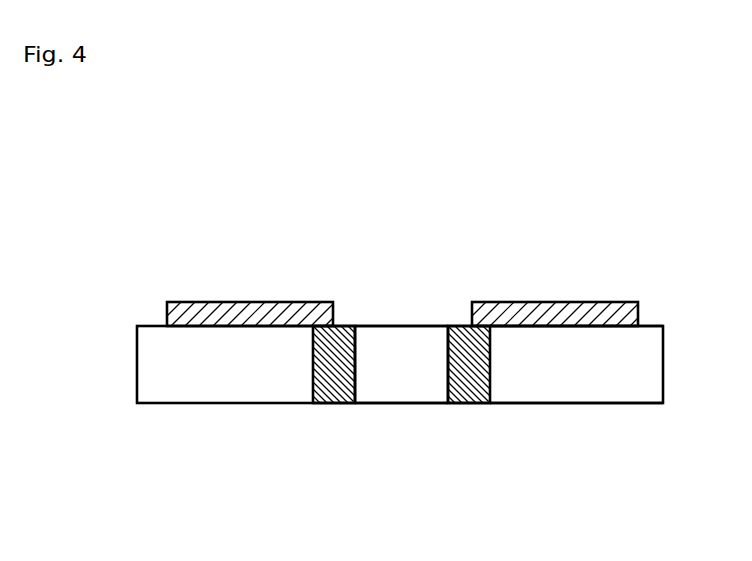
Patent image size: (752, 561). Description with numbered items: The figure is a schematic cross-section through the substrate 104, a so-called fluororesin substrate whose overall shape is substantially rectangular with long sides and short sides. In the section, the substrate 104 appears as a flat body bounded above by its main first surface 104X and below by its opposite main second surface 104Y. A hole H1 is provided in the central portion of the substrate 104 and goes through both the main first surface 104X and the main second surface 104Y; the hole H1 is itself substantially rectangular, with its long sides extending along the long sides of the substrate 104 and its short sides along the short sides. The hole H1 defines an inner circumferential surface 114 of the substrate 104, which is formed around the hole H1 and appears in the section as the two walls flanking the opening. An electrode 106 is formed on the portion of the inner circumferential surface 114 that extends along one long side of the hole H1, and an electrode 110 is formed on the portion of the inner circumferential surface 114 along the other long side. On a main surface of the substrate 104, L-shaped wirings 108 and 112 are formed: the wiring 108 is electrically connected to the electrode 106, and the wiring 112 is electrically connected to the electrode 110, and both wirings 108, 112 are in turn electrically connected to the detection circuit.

The substrate 104 is at (178, 406).
The main first surface 104X is at (647, 326).
The main second surface 104Y is at (585, 405).
The electrode 106 is at (355, 375).
The wiring 108 is at (207, 302).
The electrode 110 is at (480, 380).
The wiring 112 is at (572, 302).
The inner circumferential surface 114 is at (487, 350).
The hole H1 is at (411, 389).